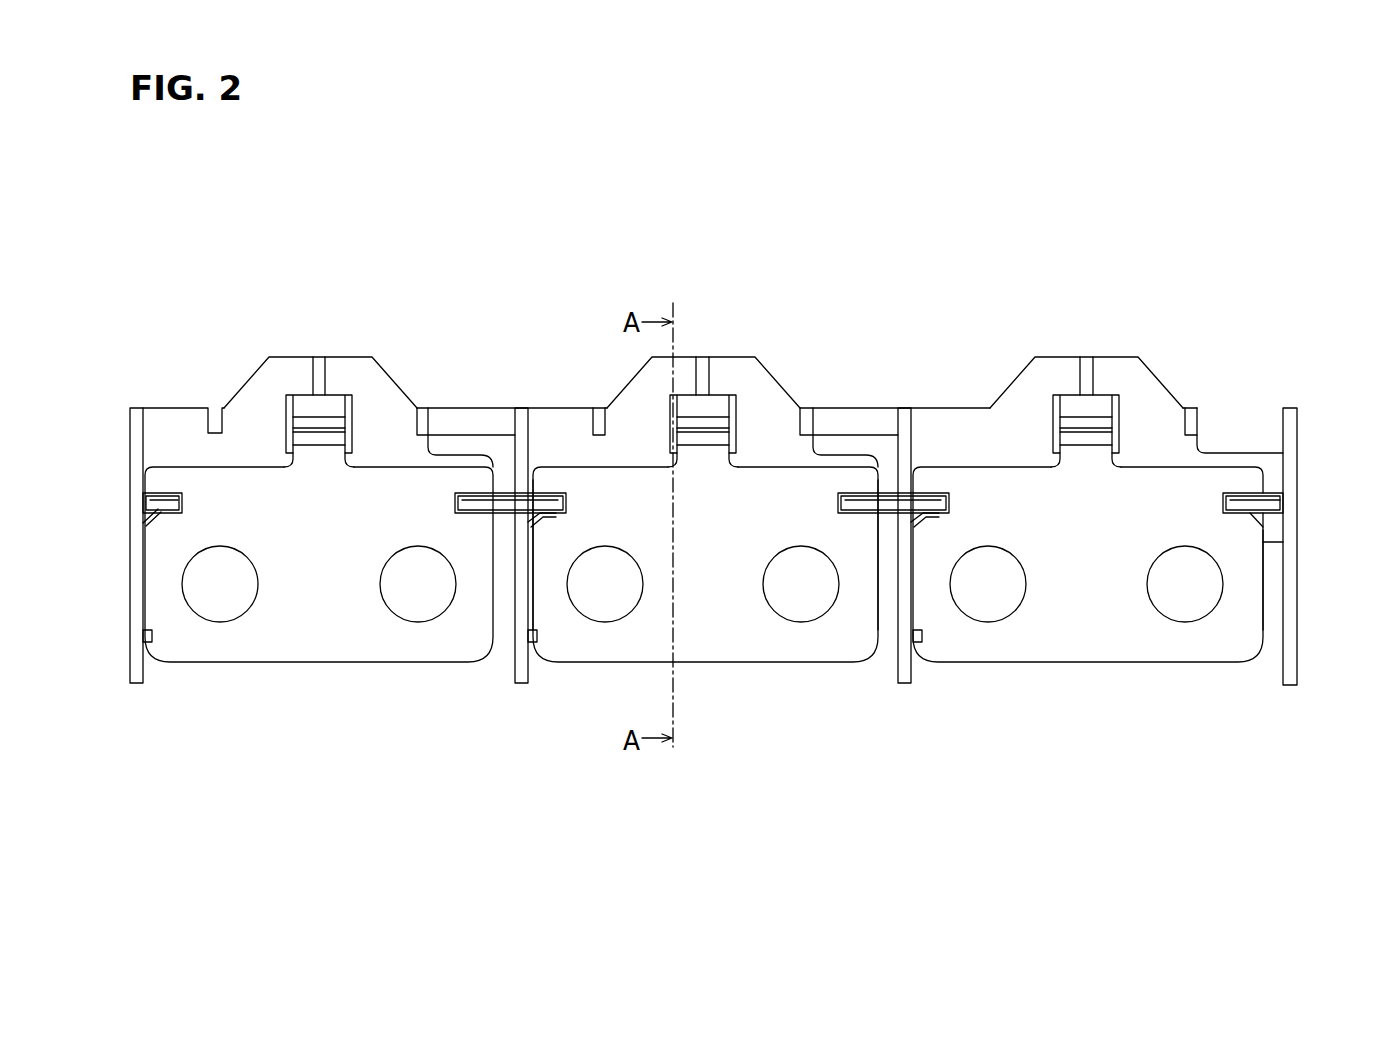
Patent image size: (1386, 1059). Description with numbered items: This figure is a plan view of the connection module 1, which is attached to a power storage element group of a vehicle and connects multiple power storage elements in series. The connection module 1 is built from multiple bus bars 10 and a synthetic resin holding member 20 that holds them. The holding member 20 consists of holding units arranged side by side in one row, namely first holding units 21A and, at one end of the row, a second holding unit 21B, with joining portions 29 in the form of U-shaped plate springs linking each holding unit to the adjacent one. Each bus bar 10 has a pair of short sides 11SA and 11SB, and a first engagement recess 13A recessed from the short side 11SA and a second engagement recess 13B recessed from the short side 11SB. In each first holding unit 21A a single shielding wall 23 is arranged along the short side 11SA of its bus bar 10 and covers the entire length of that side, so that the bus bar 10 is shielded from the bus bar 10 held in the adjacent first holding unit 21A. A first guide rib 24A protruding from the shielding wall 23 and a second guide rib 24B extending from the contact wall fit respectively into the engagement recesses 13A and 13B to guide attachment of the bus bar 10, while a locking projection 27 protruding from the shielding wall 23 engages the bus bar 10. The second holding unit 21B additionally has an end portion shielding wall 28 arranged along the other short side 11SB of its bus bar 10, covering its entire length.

The connection module 1 is at (1017, 180).
The bus bar 10 is at (288, 630).
The short side 11SA is at (528, 605).
The short side 11SB is at (880, 602).
The first engagement recess 13A is at (508, 462).
The second engagement recess 13B is at (915, 460).
The holding member 20 is at (922, 203).
The first holding unit 21A is at (395, 357).
The second holding unit 21B is at (941, 388).
The shielding wall 23 is at (519, 567).
The first guide rib 24A is at (508, 462).
The second guide rib 24B is at (915, 460).
The locking projection 27 is at (537, 637).
The end portion shielding wall 28 is at (1290, 432).
The joining portion 29 is at (472, 420).